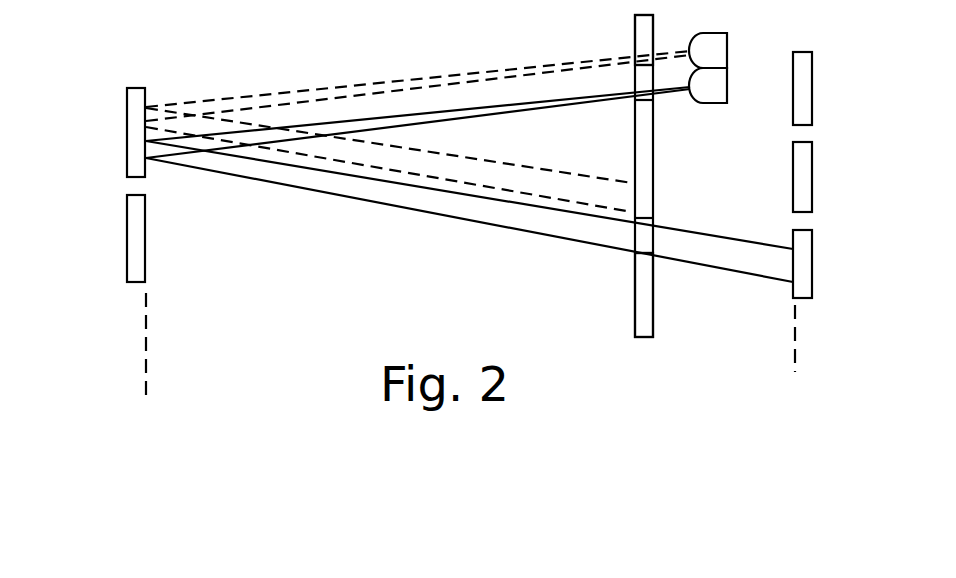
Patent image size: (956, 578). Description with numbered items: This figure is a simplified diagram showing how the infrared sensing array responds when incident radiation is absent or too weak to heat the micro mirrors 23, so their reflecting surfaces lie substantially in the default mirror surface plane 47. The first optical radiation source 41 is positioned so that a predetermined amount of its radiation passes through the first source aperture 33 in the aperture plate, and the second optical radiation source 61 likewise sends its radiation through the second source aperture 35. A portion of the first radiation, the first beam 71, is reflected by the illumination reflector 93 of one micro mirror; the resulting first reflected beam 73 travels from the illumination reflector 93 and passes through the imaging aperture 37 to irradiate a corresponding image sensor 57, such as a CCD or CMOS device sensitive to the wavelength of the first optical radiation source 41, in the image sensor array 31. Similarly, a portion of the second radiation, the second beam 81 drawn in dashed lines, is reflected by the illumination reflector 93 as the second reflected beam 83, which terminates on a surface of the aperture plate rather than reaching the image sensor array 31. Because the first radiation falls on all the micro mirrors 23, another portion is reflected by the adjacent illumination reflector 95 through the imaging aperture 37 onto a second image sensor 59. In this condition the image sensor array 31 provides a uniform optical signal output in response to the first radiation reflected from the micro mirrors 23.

The micro mirrors 23 is at (106, 87).
The illumination reflector 93 is at (146, 94).
The adjacent illumination reflector 95 is at (147, 245).
The default mirror surface plane 47 is at (147, 381).
The second beam 81 is at (418, 80).
The second reflected beam 83 is at (434, 152).
The first beam 71 is at (512, 114).
The first reflected beam 73 is at (486, 227).
The first source aperture 33 is at (658, 98).
The second source aperture 35 is at (632, 52).
The imaging aperture 37 is at (628, 258).
The second optical radiation source 61 is at (718, 30).
The first optical radiation source 41 is at (722, 104).
The image sensor array 31 is at (808, 37).
The second image sensor 59 is at (815, 168).
The image sensor 57 is at (808, 260).